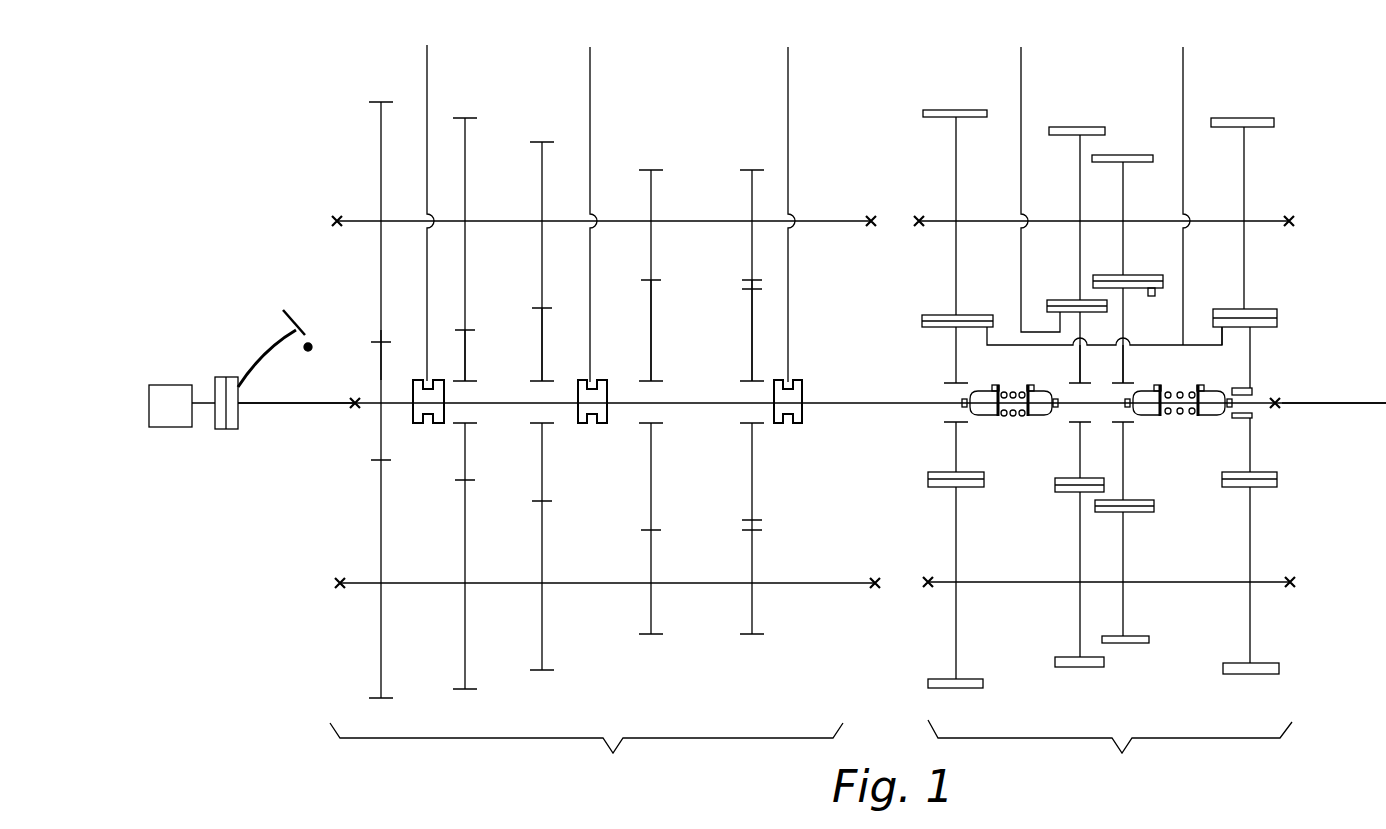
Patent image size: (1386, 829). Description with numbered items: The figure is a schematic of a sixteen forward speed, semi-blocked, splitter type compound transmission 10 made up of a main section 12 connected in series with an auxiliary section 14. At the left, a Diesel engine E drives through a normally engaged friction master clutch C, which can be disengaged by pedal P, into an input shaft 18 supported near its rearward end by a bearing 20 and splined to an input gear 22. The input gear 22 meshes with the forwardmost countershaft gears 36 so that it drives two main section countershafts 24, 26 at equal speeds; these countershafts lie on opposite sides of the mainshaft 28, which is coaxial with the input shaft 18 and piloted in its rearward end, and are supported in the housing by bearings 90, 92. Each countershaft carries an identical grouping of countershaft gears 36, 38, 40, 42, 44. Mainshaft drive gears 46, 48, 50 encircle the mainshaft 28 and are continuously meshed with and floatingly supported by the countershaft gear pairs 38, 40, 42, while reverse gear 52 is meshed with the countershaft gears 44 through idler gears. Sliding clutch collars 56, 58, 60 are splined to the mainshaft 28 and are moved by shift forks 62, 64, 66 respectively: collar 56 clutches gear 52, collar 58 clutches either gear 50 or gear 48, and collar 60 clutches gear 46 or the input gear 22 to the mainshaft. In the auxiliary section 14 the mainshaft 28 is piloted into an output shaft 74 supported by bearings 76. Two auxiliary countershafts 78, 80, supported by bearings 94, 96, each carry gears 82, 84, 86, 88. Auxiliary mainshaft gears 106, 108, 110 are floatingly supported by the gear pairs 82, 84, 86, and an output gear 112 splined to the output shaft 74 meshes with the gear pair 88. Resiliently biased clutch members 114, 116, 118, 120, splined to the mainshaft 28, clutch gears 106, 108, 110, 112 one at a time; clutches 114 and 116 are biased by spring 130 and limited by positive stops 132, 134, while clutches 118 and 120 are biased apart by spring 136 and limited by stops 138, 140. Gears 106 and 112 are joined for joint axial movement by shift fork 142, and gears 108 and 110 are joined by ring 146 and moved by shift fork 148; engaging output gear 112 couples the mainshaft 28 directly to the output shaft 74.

The compound transmission 10 is at (893, 102).
The main section 12 is at (586, 756).
The auxiliary section 14 is at (1110, 755).
The input shaft 18 is at (304, 402).
The bearing 20 is at (352, 410).
The input gear 22 is at (380, 356).
The main section countershaft 24 is at (492, 224).
The main section countershaft 26 is at (481, 582).
The mainshaft 28 is at (711, 405).
The countershaft gear 36 is at (380, 112).
The countershaft gear 38 is at (466, 130).
The countershaft gear 40 is at (541, 160).
The countershaft gear 42 is at (652, 196).
The countershaft gear 44 is at (751, 192).
The mainshaft drive gear 46 is at (466, 373).
The mainshaft drive gear 48 is at (543, 377).
The mainshaft drive gear 50 is at (652, 368).
The reverse gear 52 is at (751, 372).
The sliding clutch collar 56 is at (795, 425).
The sliding clutch collar 58 is at (599, 425).
The sliding clutch collar 60 is at (436, 425).
The shift fork 62 is at (790, 352).
The shift fork 64 is at (591, 330).
The shift fork 66 is at (428, 306).
The output shaft 74 is at (1332, 402).
The bearings 76 is at (1280, 412).
The auxiliary section countershaft 78 is at (1125, 218).
The auxiliary section countershaft 80 is at (1170, 581).
The auxiliary countershaft gear 82 is at (957, 167).
The auxiliary countershaft gear 84 is at (1079, 198).
The auxiliary countershaft gear 86 is at (1122, 276).
The auxiliary countershaft gear 88 is at (1245, 200).
The bearing 90 is at (337, 214).
The bearing 92 is at (871, 214).
The bearing 94 is at (919, 214).
The bearing 96 is at (1295, 218).
The auxiliary section mainshaft gear 106 is at (955, 360).
The auxiliary section mainshaft gear 108 is at (1081, 366).
The auxiliary section mainshaft gear 110 is at (1124, 377).
The output gear 112 is at (1253, 350).
The clutch member 114 is at (992, 417).
The clutch member 116 is at (1035, 417).
The clutch member 118 is at (1153, 417).
The clutch member 120 is at (1210, 417).
The spring 130 is at (1016, 392).
The positive stop 132 is at (965, 397).
The positive stop 134 is at (1056, 409).
The spring 136 is at (1180, 392).
The stop 138 is at (1126, 406).
The stop 140 is at (1252, 396).
The shift fork 142 is at (1185, 290).
The ring 146 is at (1124, 298).
The shift fork 148 is at (1022, 90).
The engine E is at (170, 406).
The master clutch C is at (221, 434).
The pedal P is at (300, 306).